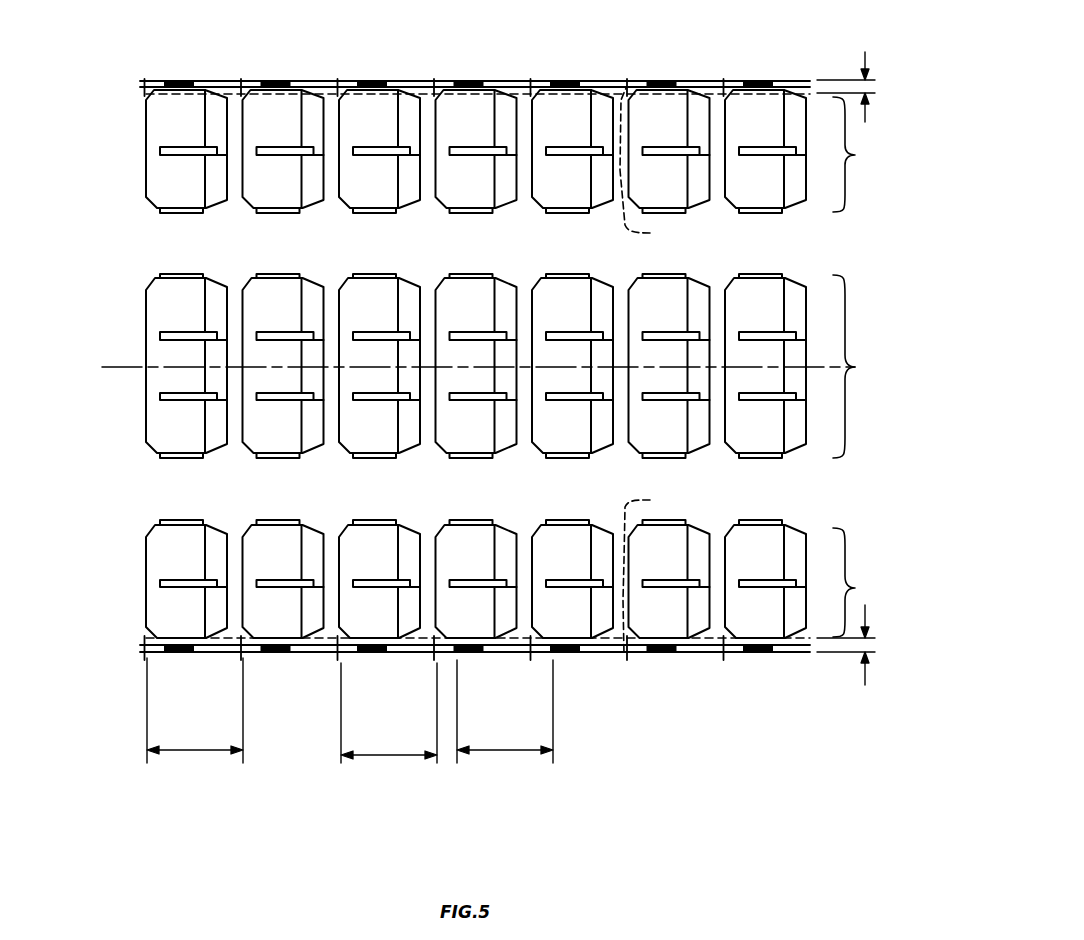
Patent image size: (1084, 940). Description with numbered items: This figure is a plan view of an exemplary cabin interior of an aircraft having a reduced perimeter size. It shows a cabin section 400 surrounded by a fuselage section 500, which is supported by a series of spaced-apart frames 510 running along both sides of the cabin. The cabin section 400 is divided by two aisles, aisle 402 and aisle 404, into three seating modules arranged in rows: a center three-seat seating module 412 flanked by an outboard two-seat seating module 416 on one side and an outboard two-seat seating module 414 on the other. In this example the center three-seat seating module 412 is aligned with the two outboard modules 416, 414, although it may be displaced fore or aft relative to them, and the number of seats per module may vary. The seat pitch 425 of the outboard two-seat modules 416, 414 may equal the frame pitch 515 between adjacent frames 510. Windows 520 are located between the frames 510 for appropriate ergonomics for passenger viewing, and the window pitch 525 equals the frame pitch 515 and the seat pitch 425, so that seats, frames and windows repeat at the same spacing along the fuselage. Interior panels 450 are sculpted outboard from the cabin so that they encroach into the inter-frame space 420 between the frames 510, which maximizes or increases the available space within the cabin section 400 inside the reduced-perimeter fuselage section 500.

The cabin section 400 is at (486, 364).
The aisle 402 is at (535, 173).
The aisle 404 is at (535, 558).
The center three-seat seating module 412 is at (524, 366).
The outboard two-seat seating module 414 is at (868, 582).
The outboard two-seat seating module 416 is at (868, 154).
The inter-frame space 420 is at (872, 85).
The seat pitch 425 is at (391, 760).
The interior panels 450 is at (654, 371).
The fuselage section 500 is at (673, 79).
The frames 510 is at (142, 81).
The windows 520 is at (176, 80).
The frame pitch 515 is at (197, 756).
The window pitch 525 is at (507, 754).